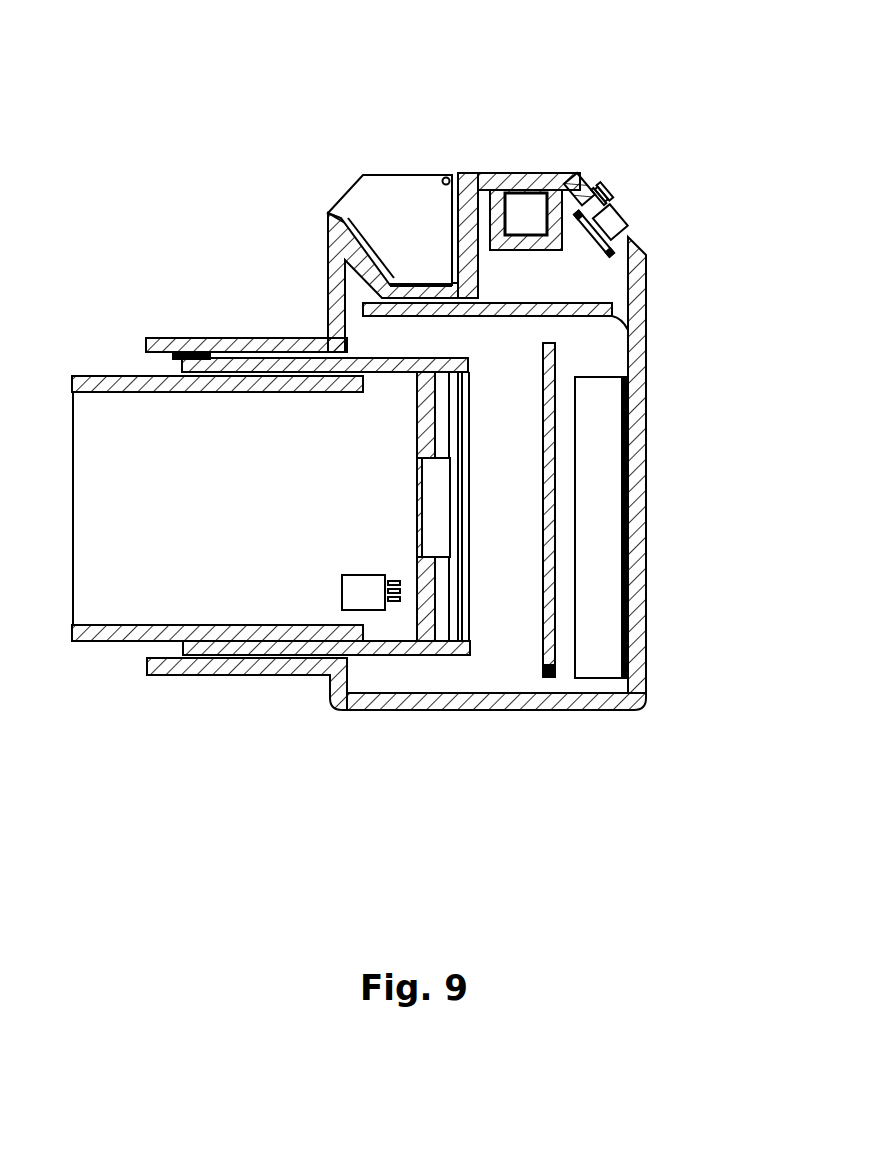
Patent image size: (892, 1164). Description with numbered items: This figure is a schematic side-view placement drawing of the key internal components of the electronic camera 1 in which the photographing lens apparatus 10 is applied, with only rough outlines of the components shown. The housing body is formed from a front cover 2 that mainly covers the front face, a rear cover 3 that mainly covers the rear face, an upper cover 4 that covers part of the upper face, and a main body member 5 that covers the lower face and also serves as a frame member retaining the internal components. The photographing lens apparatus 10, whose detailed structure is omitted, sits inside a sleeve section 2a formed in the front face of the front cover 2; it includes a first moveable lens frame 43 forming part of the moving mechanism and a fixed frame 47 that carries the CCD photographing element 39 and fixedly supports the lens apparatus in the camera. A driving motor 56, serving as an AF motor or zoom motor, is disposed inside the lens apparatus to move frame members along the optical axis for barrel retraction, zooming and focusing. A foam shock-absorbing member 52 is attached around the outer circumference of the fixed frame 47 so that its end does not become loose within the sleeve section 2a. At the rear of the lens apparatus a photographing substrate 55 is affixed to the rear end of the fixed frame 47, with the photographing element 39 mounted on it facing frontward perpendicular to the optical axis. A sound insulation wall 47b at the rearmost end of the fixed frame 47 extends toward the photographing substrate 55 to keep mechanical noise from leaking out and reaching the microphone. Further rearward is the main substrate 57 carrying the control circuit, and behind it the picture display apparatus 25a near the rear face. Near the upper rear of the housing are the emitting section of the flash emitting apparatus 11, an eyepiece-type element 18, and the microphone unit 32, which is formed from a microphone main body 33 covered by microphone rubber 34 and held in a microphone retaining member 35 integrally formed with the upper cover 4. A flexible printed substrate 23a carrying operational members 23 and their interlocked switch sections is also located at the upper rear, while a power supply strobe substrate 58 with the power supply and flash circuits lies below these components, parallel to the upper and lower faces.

The electronic camera 1 is at (411, 404).
The front cover 2 is at (328, 233).
The sleeve section 2a is at (267, 667).
The rear cover 3 is at (645, 297).
The upper cover 4 is at (478, 185).
The main body member 5 is at (543, 703).
The photographing lens apparatus 10 is at (194, 532).
The flash emitting apparatus 11 is at (413, 187).
The eyepiece frame 18 is at (518, 177).
The operational members 23 is at (627, 209).
The flexible printed substrate 23a is at (622, 237).
The picture display apparatus 25a is at (605, 435).
The microphone unit 32 is at (644, 171).
The microphone main body 33 is at (598, 205).
The microphone rubber 34 is at (600, 197).
The microphone retaining member 35 is at (597, 197).
The CCD photographing element 39 is at (438, 530).
The first moveable lens frame 43 is at (108, 380).
The fixed frame 47 is at (361, 451).
The sound insulation wall 47b is at (465, 367).
The foam shock-absorbing member 52 is at (160, 352).
The photographing substrate 55 is at (453, 639).
The driving motor 56 is at (367, 597).
The main substrate 57 is at (547, 680).
The power supply strobe substrate 58 is at (647, 342).